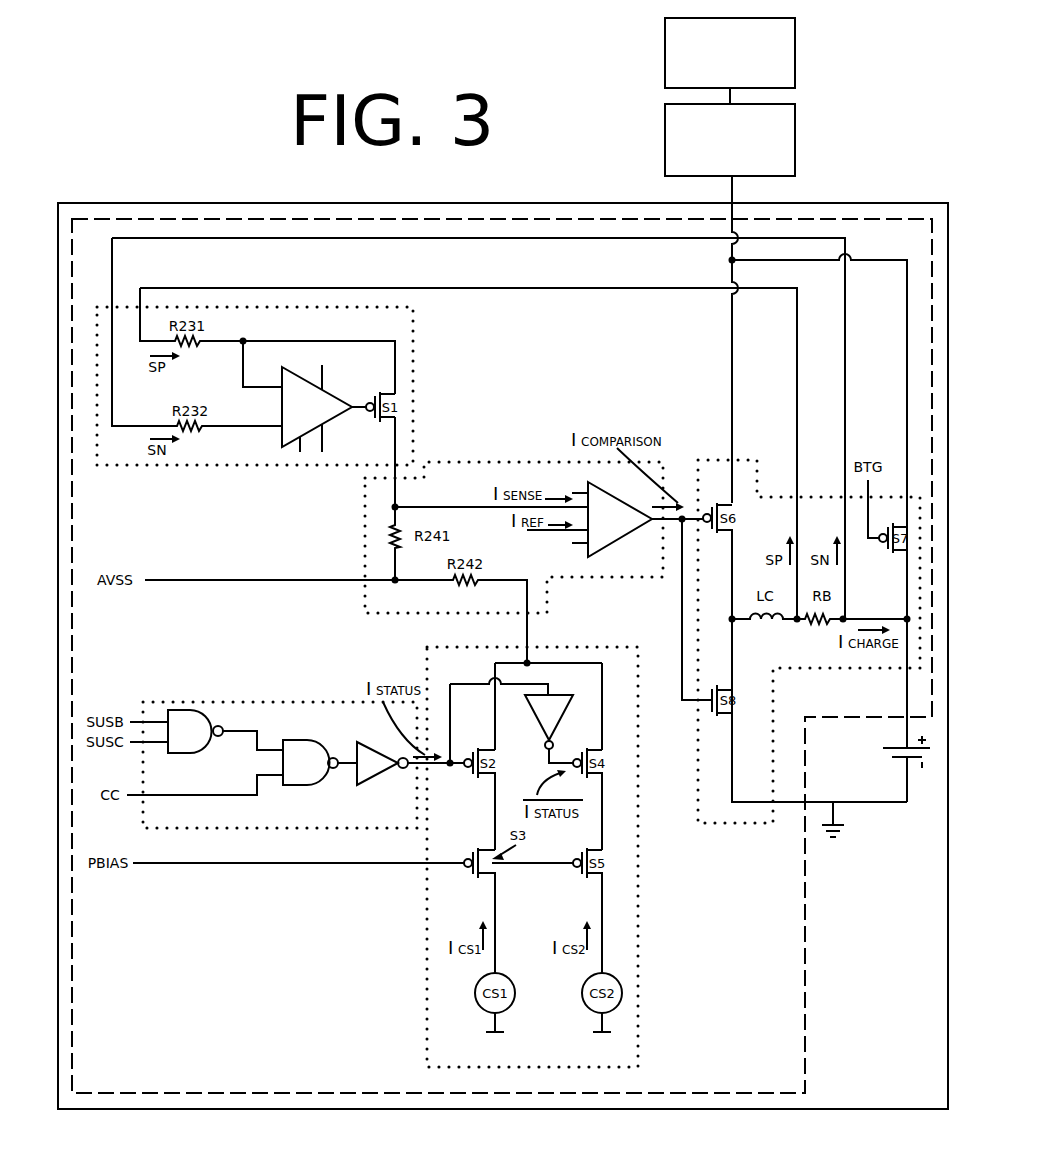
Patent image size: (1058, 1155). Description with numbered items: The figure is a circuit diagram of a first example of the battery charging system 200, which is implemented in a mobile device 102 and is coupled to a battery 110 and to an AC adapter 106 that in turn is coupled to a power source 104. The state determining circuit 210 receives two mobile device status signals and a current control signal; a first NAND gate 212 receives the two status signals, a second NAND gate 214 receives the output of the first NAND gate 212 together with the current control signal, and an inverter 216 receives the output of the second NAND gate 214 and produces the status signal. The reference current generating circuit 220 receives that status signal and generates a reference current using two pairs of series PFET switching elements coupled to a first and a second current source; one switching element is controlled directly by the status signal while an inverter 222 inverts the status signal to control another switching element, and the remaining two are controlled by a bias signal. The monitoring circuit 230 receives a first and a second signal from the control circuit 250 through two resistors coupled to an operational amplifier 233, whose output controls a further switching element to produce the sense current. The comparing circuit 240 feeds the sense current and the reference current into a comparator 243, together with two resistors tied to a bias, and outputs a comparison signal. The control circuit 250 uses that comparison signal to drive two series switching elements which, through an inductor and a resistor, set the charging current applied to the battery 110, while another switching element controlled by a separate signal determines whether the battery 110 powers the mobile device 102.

The mobile device 102 is at (917, 1101).
The power source 104 is at (730, 53).
The AC adapter 106 is at (730, 140).
The battery 110 is at (882, 769).
The battery charging system 200 is at (776, 1088).
The state determining circuit 210 is at (386, 822).
The first NAND gate 212 is at (195, 731).
The second NAND gate 214 is at (310, 762).
The inverter 216 is at (382, 763).
The reference current generating circuit 220 is at (606, 1059).
The inverter 222 is at (549, 722).
The monitoring circuit 230 is at (372, 323).
The operational amplifier 233 is at (318, 406).
The comparing circuit 240 is at (379, 609).
The comparator 243 is at (597, 514).
The control circuit 250 is at (704, 482).